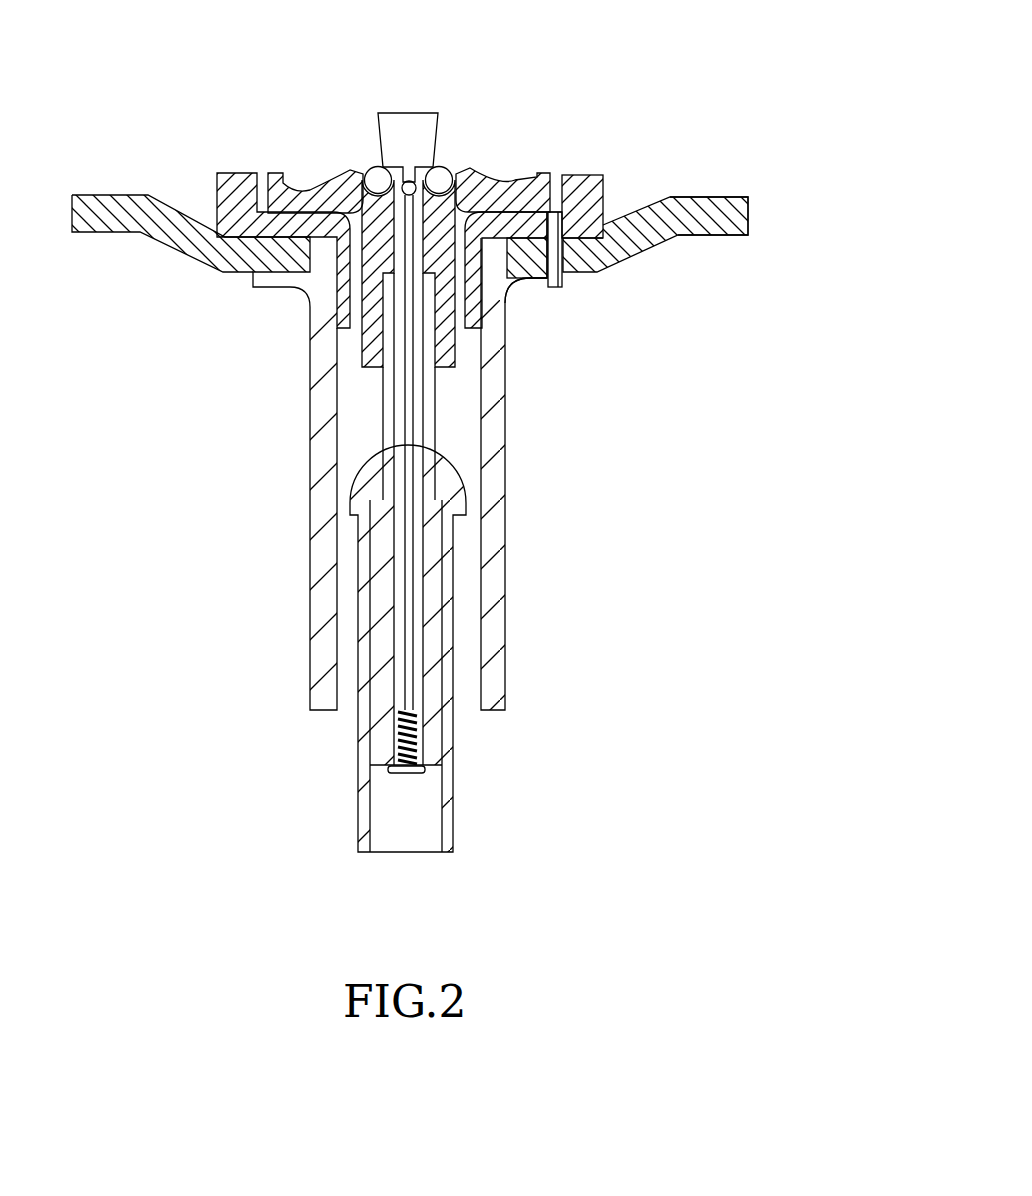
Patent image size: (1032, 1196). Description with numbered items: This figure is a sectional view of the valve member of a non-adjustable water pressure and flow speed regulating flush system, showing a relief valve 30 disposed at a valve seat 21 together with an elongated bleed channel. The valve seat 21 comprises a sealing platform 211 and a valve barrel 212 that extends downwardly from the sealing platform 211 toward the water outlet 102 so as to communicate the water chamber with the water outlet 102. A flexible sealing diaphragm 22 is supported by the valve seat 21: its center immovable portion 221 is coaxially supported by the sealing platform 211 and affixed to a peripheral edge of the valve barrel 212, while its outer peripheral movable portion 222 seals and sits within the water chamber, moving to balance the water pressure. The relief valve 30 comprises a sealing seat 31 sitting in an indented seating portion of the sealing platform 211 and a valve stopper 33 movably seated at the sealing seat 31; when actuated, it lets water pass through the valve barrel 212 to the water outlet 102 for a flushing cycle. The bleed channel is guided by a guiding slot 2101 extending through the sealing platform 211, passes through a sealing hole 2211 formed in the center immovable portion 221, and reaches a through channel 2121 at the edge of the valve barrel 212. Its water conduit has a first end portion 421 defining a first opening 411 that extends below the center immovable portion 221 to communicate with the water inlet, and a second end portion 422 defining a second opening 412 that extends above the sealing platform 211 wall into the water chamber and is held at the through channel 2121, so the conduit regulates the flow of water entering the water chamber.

The relief valve 30 is at (394, 359).
The sealing seat 31 is at (317, 196).
The valve stopper 33 is at (417, 135).
The valve seat 21 is at (362, 403).
The sealing platform 211 is at (248, 219).
The valve barrel 212 is at (325, 433).
The guiding slot 2101 is at (536, 222).
The through channel 2121 is at (540, 300).
The sealing diaphragm 22 is at (689, 300).
The center immovable portion 221 is at (578, 258).
The outer peripheral movable portion 222 is at (712, 212).
The sealing hole 2211 is at (572, 274).
The second opening 412 is at (560, 198).
The second end portion 422 is at (603, 176).
The first end portion 421 is at (563, 297).
The first opening 411 is at (567, 312).
The water outlet 102 is at (477, 745).